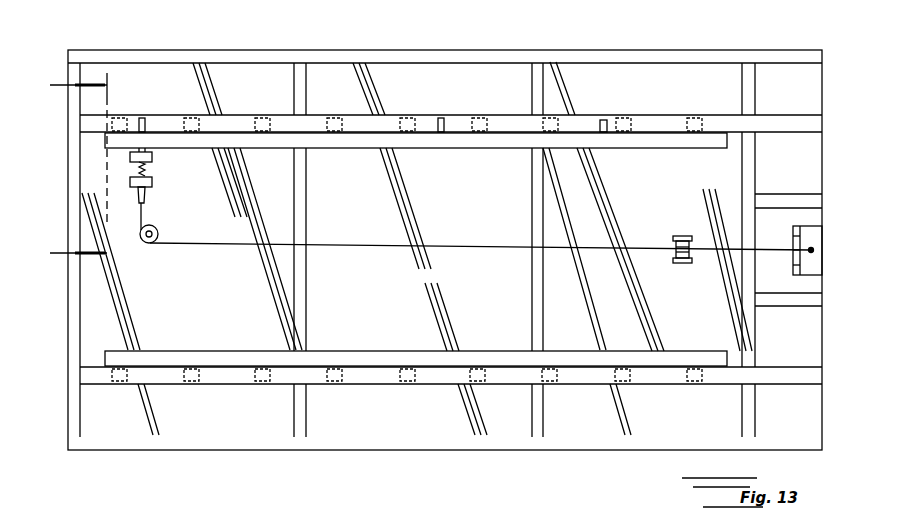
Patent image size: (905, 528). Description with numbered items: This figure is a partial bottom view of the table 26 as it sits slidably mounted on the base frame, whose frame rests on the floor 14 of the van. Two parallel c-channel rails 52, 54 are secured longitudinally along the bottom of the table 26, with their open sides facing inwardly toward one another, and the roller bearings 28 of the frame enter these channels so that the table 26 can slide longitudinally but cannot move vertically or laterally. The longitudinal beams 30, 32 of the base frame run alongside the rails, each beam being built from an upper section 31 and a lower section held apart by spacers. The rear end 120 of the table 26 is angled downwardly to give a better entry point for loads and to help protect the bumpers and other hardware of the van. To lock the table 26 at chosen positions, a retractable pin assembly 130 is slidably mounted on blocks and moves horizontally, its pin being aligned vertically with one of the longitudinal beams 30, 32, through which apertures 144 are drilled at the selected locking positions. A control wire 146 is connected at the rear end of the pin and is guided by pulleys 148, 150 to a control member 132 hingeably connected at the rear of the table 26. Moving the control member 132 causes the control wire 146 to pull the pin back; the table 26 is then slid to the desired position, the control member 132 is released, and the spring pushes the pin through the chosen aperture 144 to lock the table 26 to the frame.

The floor 14 is at (73, 178).
The table 26 is at (518, 43).
The roller bearings 28 is at (332, 118).
The longitudinal beam 30 is at (322, 360).
The upper section 31 is at (383, 140).
The longitudinal beam 32 is at (352, 120).
The c-channel rail 52 is at (403, 118).
The c-channel rail 54 is at (462, 400).
The rear end 120 is at (763, 95).
The retractable pin assembly 130 is at (130, 183).
The control member 132 is at (816, 237).
The apertures 144 is at (143, 128).
The control wire 146 is at (507, 246).
The pulley 148 is at (141, 231).
The pulley 150 is at (678, 238).